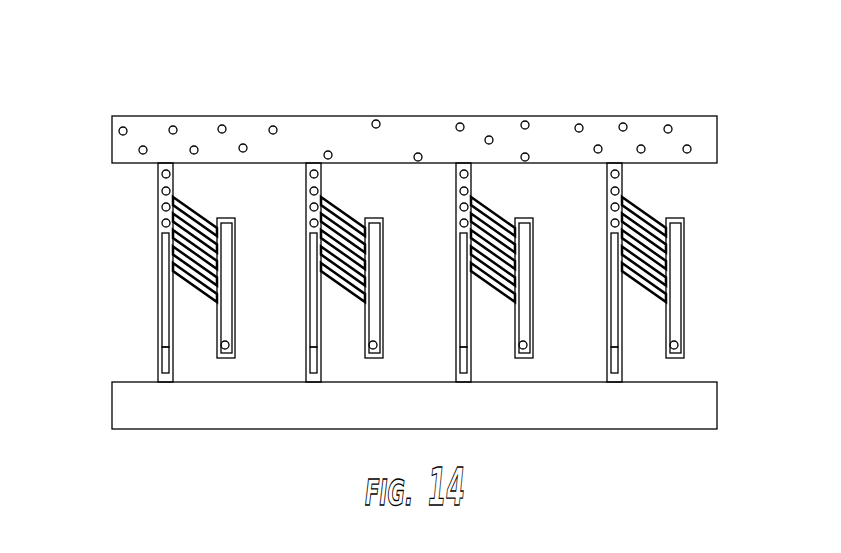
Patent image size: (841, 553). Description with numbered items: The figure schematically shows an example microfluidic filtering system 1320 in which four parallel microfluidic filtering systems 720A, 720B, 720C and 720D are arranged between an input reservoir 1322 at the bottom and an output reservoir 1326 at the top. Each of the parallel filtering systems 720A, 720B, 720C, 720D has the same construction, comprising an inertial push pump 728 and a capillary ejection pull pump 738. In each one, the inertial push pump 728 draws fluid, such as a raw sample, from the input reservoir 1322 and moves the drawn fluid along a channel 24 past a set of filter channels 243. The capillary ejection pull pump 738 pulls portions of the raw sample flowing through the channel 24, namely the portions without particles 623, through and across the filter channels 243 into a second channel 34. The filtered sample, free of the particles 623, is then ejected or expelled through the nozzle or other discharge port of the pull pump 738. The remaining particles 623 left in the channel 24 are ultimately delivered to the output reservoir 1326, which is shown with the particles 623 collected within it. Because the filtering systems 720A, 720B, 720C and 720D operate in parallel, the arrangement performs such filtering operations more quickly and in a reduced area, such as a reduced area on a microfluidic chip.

The microfluidic filtering system 1320 is at (88, 85).
The output reservoir 1326 is at (348, 125).
The input reservoir 1322 is at (185, 429).
The particles 623 is at (173, 126).
The channel 24 is at (158, 220).
The inertial push pump 728 is at (158, 353).
The channel 34 is at (235, 280).
The capillary ejection pull pump 738 is at (229, 343).
The filter channels 243 is at (197, 288).
The microfluidic filtering system 720A is at (173, 272).
The microfluidic filtering system 720B is at (400, 235).
The microfluidic filtering system 720C is at (553, 233).
The microfluidic filtering system 720D is at (703, 233).